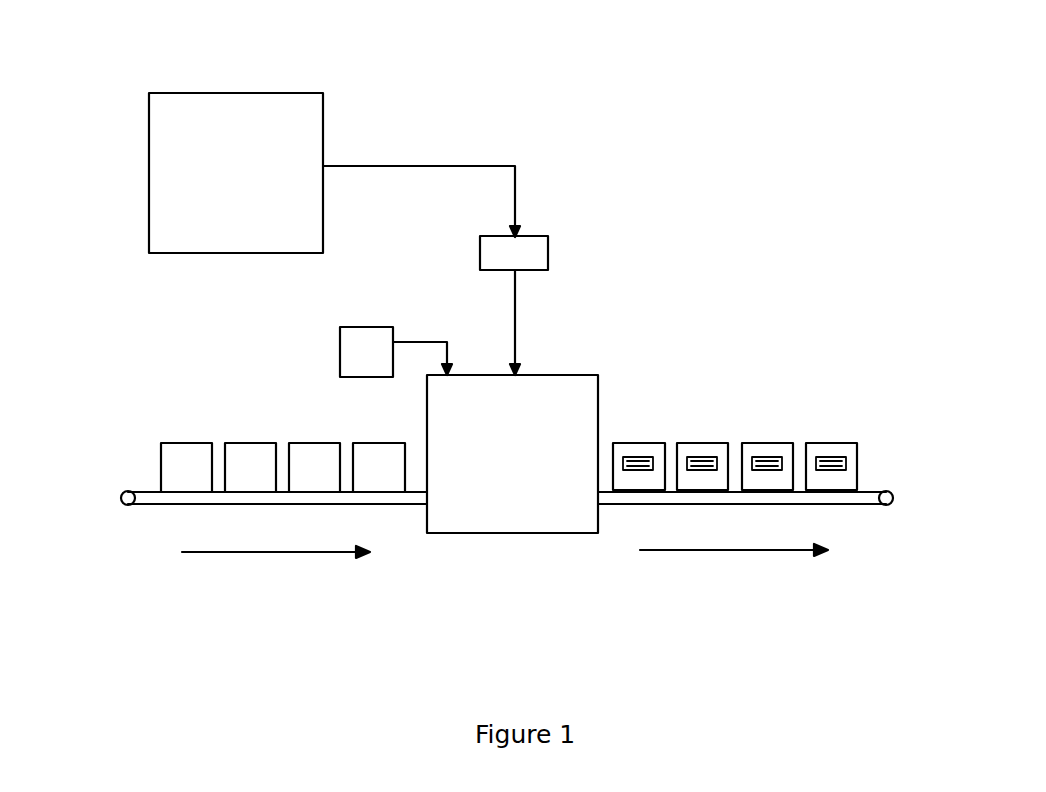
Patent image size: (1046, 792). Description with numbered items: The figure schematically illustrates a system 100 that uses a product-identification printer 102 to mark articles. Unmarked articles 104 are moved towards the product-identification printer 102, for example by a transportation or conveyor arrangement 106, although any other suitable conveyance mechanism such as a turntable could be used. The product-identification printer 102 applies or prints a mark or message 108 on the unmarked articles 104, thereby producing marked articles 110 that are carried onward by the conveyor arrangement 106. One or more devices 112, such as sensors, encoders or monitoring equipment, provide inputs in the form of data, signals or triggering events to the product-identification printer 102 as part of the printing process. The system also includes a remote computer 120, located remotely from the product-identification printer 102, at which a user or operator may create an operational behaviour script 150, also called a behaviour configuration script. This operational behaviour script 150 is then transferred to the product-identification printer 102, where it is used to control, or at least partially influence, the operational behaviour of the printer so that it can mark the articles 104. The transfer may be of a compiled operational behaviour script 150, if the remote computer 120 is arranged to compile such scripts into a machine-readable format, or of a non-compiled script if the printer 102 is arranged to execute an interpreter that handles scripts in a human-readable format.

The system 100 is at (822, 117).
The product-identification printer 102 is at (504, 534).
The unmarked articles 104 is at (367, 443).
The transportation or conveyor arrangement 106 is at (158, 507).
The mark/message 108 is at (830, 470).
The marked articles 110 is at (828, 443).
The devices 112 is at (340, 353).
The remote computer 120 is at (149, 172).
The operational behaviour script 150 is at (548, 248).